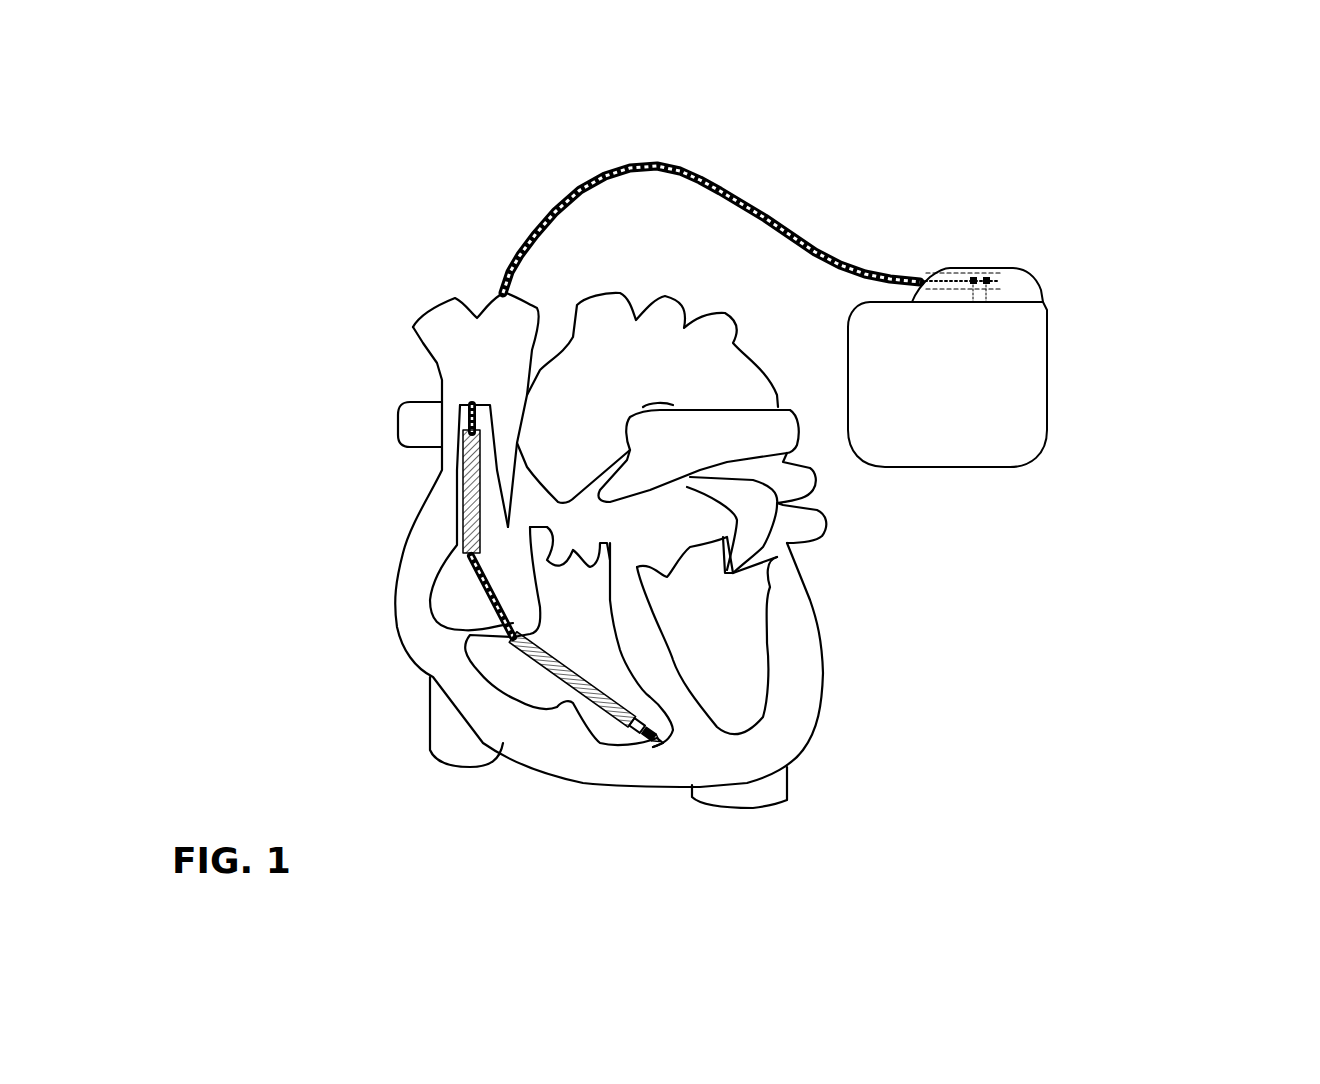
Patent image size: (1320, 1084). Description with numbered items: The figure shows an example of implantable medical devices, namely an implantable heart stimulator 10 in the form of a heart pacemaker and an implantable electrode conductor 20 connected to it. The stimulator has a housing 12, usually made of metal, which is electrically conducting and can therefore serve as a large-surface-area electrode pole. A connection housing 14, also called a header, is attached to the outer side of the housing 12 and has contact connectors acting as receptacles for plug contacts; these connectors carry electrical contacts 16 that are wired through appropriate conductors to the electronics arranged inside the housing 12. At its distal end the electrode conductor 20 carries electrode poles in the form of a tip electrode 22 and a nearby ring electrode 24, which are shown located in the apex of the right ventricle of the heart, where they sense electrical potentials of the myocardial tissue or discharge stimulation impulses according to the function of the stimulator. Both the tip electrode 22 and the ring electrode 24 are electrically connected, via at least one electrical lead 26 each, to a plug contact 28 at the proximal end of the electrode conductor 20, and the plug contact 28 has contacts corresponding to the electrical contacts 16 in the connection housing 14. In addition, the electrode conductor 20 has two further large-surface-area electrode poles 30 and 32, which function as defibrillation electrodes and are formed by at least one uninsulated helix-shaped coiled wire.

The implantable heart stimulator 10 is at (1108, 436).
The housing 12 is at (950, 428).
The connection housing 14 is at (1010, 283).
The electrical contacts 16 is at (997, 276).
The electrode conductor 20 is at (535, 237).
The tip electrode 22 is at (654, 742).
The ring electrode 24 is at (636, 733).
The electrical lead 26 is at (600, 178).
The plug contact 28 is at (963, 274).
The defibrillation electrode pole 30 is at (533, 663).
The defibrillation electrode pole 32 is at (478, 478).